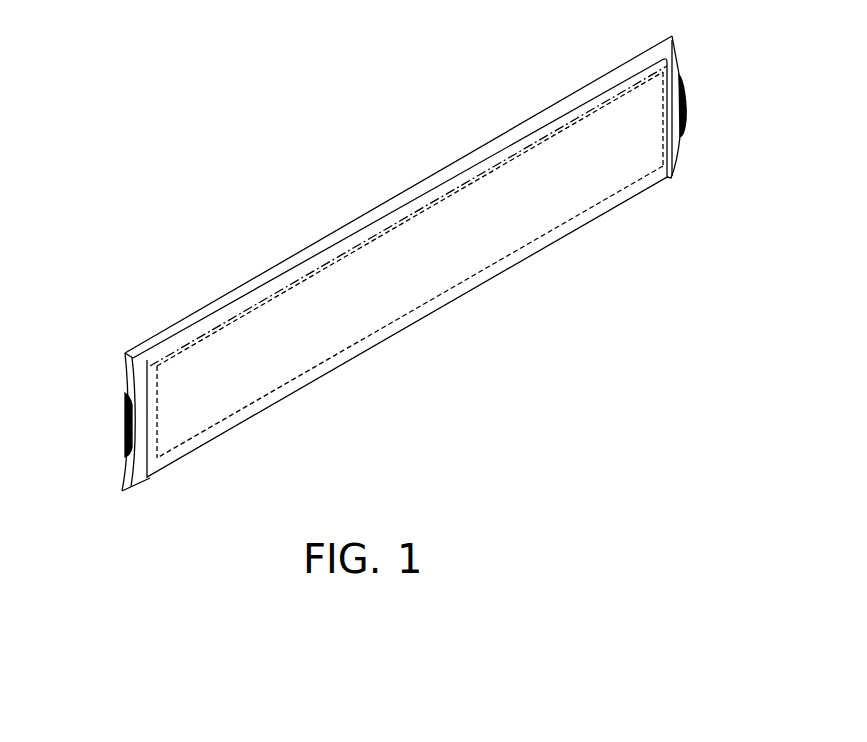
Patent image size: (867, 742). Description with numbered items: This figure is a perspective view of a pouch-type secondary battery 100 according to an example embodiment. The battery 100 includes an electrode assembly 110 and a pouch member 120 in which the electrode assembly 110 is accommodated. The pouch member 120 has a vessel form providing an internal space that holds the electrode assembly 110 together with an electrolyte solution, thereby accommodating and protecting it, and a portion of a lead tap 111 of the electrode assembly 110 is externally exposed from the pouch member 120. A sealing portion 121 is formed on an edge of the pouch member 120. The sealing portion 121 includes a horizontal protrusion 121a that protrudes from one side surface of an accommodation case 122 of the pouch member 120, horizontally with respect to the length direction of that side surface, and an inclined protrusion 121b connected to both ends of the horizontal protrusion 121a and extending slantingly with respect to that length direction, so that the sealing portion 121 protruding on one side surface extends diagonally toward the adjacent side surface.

The pouch-type secondary battery 100 is at (321, 143).
The electrode assembly 110 is at (130, 443).
The lead tap 111 is at (128, 417).
The pouch member 120 is at (184, 151).
The sealing portion 121 is at (179, 219).
The horizontal protrusion 121a is at (124, 352).
The inclined protrusion 121b is at (152, 357).
The accommodation case 122 is at (258, 276).